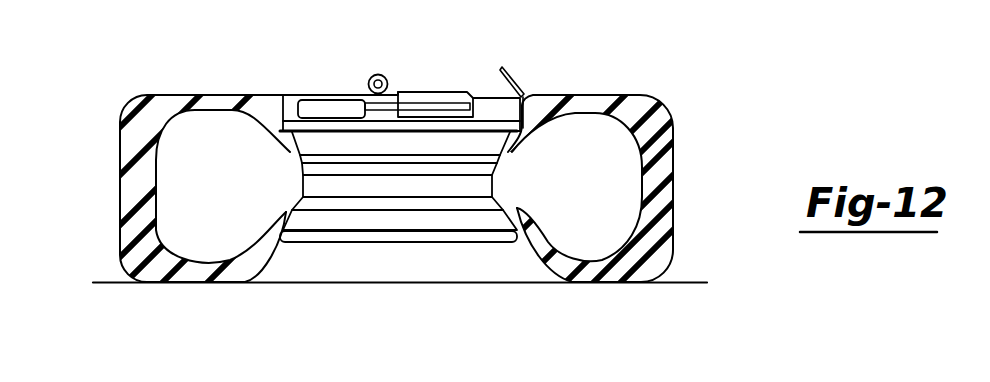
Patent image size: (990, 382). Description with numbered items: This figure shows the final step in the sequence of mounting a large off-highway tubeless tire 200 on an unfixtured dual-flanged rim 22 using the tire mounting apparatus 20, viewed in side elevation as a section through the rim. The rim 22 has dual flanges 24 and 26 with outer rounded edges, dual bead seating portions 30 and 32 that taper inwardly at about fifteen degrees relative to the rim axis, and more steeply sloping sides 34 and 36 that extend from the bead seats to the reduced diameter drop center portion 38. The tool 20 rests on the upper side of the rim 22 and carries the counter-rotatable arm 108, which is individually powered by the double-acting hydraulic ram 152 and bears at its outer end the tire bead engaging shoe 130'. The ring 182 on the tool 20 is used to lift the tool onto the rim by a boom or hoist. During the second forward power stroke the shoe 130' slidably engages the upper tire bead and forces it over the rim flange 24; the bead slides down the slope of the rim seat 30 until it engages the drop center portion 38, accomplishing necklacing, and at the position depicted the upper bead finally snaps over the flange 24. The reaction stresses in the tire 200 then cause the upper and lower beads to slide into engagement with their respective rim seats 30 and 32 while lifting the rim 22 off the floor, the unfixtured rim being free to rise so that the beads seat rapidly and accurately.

The tire mounting apparatus 20 is at (321, 86).
The rim 22 is at (348, 243).
The rim flange 24 is at (412, 130).
The rim flange 26 is at (447, 237).
The bead seating portion 30 is at (297, 142).
The bead seating portion 32 is at (283, 213).
The sloping side 34 is at (300, 170).
The sloping side 36 is at (300, 198).
The drop center portion 38 is at (490, 187).
The arm 108 is at (478, 96).
The tire bead engaging shoe 130' is at (556, 82).
The hydraulic ram 152 is at (308, 96).
The ring 182 is at (388, 77).
The tire 200 is at (678, 163).